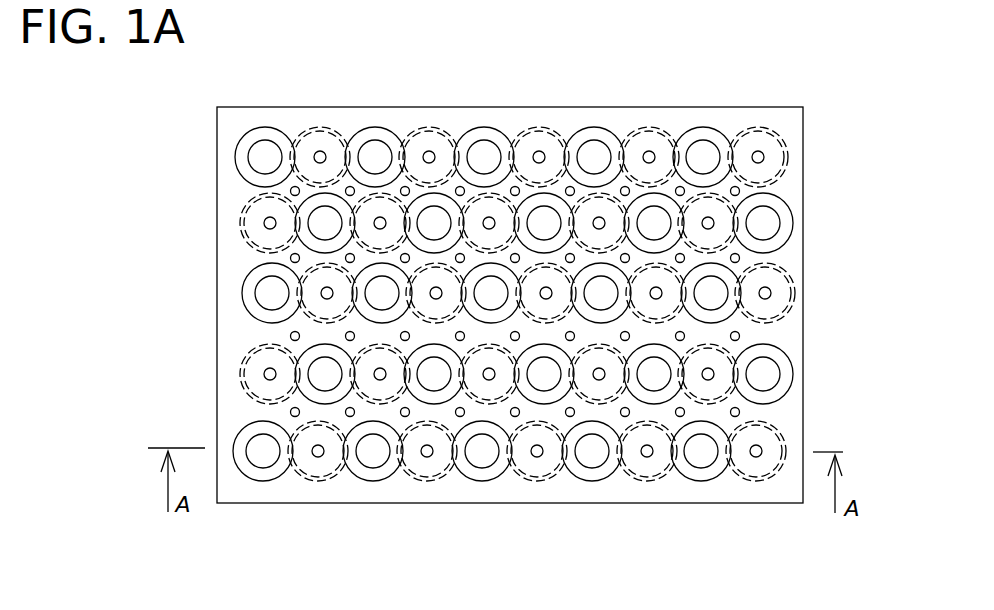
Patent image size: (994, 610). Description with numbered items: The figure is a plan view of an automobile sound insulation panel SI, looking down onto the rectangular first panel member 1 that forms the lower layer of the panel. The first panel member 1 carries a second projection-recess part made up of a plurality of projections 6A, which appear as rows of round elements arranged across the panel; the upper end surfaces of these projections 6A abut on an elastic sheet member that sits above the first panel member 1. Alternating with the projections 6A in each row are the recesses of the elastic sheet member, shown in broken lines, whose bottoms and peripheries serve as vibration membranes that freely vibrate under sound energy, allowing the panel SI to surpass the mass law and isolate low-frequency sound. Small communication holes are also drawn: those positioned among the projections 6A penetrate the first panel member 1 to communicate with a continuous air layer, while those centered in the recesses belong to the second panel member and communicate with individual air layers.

The first panel member 1 is at (683, 503).
The automobile sound insulation panel SI is at (859, 102).
The projections 6A is at (267, 127).